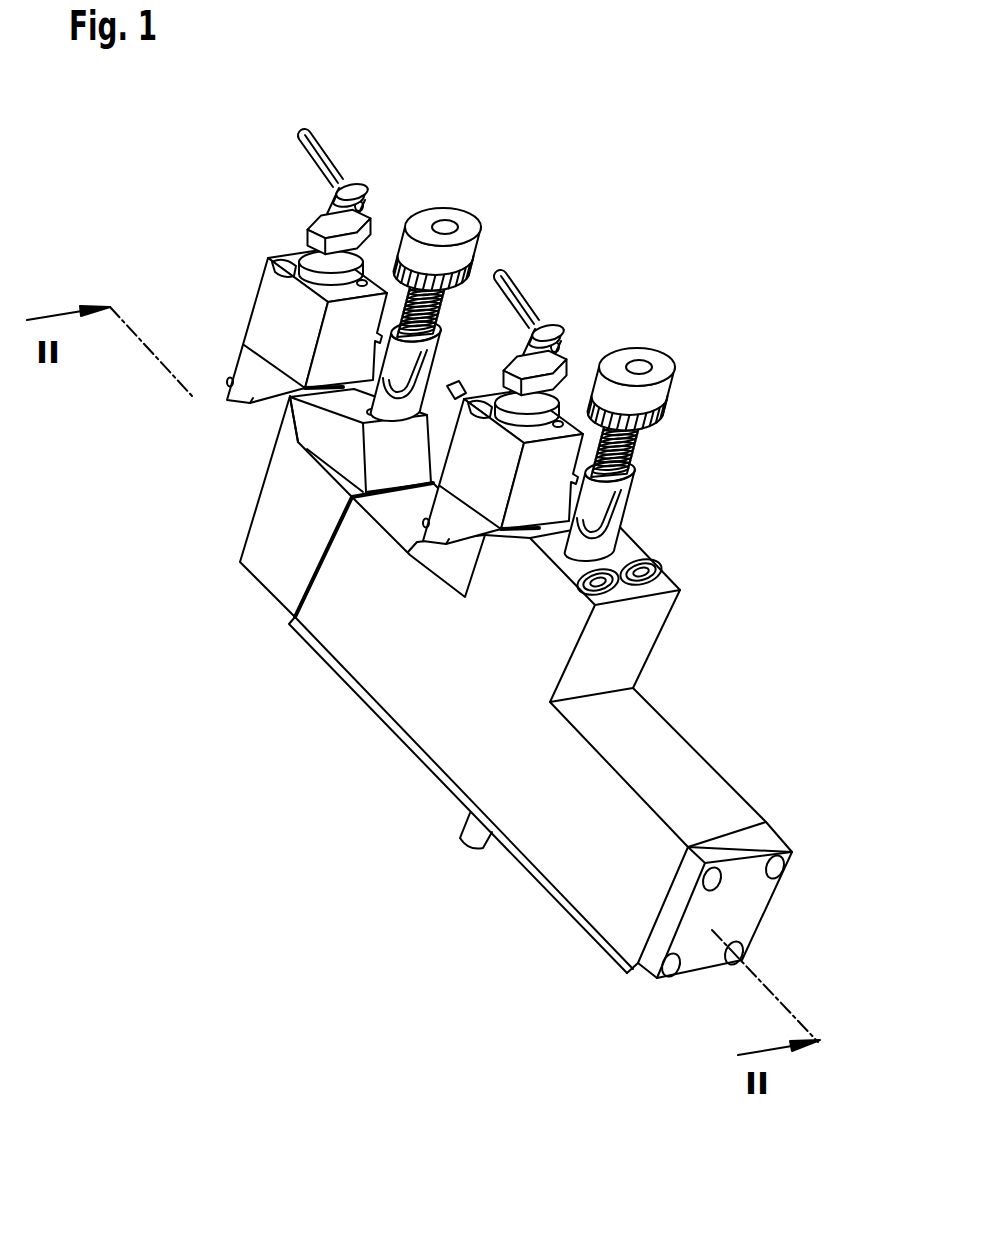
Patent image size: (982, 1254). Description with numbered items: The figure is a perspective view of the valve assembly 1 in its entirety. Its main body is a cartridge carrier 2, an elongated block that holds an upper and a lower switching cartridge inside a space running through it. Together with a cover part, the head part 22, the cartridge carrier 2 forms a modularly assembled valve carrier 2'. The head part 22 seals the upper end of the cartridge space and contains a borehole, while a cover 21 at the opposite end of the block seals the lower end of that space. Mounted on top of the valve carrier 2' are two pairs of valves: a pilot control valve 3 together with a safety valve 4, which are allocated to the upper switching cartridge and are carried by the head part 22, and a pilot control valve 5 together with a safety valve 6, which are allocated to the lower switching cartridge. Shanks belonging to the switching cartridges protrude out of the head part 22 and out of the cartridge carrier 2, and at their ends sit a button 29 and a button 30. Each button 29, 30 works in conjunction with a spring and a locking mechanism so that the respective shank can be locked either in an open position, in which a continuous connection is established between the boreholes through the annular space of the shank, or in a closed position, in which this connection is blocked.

The valve assembly 1 is at (430, 905).
The cartridge carrier 2 is at (531, 684).
The valve carrier 2' is at (274, 699).
The pilot control valve 3 is at (252, 405).
The safety valve 4 is at (490, 250).
The pilot control valve 5 is at (545, 436).
The safety valve 6 is at (683, 392).
The cover 21 is at (768, 852).
The head part 22 is at (267, 572).
The button 29 is at (434, 216).
The button 30 is at (623, 354).